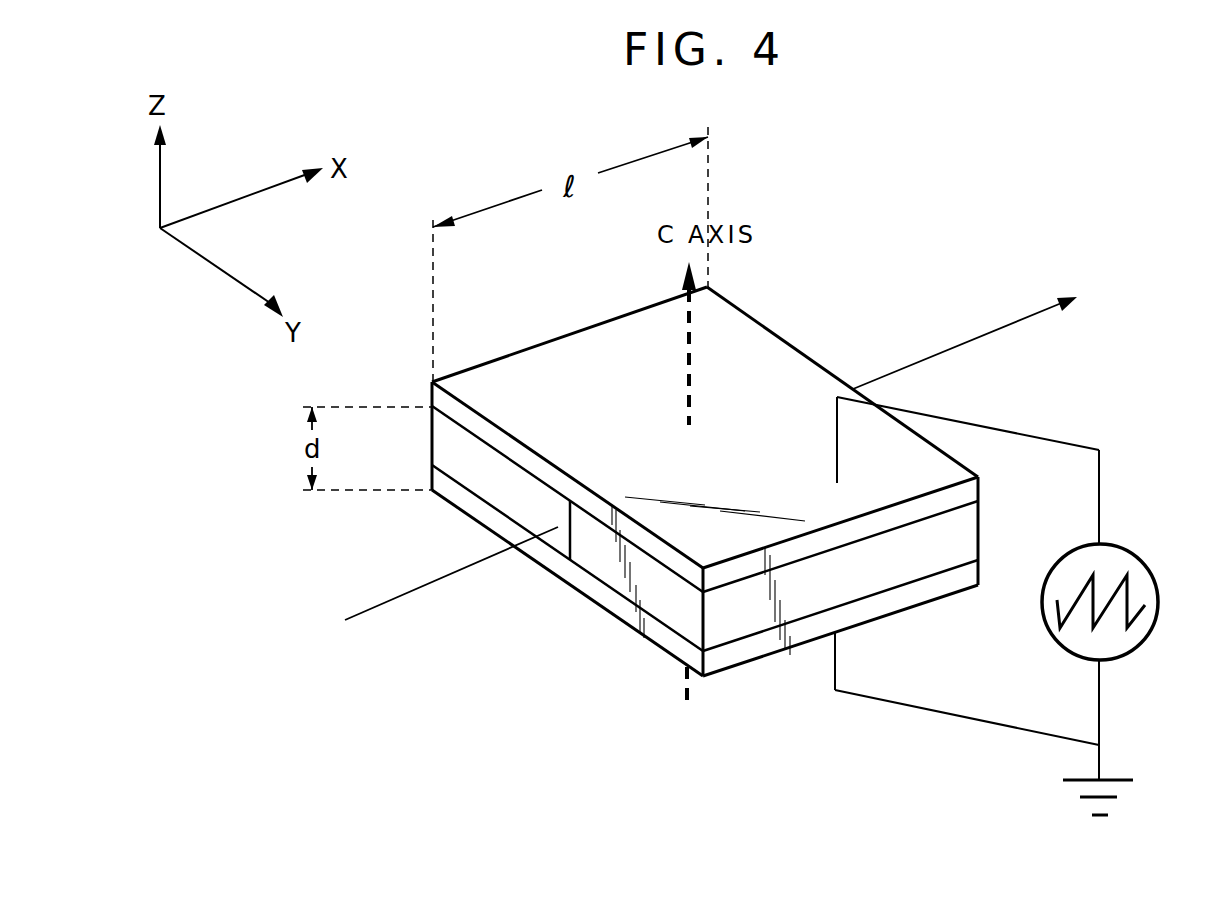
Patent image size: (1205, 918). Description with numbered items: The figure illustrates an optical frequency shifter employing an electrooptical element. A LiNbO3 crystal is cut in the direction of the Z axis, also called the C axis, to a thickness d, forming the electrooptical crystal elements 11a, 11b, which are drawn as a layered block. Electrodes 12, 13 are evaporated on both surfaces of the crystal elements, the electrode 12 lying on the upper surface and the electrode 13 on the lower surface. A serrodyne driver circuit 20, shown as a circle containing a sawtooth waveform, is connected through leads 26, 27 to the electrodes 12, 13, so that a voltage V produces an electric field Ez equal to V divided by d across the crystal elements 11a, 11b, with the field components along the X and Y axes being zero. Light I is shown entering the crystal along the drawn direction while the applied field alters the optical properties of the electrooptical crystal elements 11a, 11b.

The electrode 12 is at (543, 355).
The electrooptical crystal element 11a is at (443, 447).
The electrooptical crystal element 11b is at (740, 620).
The electrode 13 is at (460, 504).
The incident light I is at (438, 586).
The serrodyne driver circuit 20 is at (1102, 580).
The lead 26 is at (1053, 441).
The lead 27 is at (953, 712).